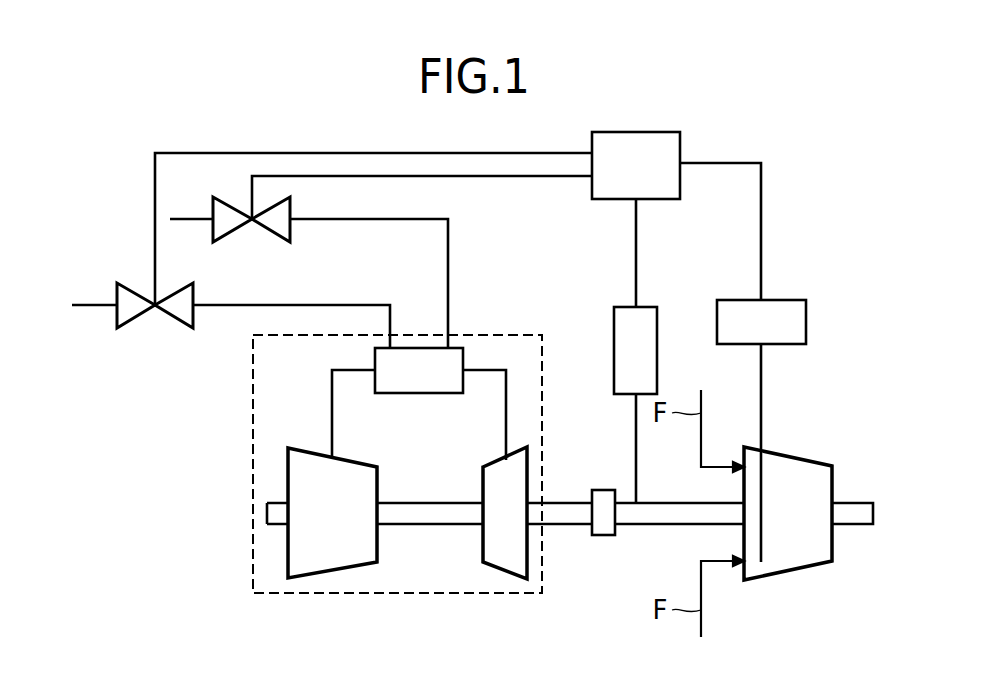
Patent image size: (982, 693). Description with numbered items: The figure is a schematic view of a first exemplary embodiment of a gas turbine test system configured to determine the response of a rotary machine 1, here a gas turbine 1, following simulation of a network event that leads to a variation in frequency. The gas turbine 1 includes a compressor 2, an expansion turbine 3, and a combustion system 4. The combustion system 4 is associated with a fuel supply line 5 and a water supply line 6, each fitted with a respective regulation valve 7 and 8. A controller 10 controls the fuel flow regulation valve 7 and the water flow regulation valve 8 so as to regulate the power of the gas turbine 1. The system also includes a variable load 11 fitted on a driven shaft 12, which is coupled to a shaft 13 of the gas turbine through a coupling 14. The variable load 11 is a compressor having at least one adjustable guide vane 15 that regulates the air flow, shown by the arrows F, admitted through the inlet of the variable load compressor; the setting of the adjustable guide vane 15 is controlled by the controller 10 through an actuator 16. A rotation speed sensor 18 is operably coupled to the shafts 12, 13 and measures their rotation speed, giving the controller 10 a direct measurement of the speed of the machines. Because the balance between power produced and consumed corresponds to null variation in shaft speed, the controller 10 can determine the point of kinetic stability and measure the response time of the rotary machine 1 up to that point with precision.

The gas turbine 1 is at (346, 594).
The compressor 2 is at (323, 527).
The expansion turbine 3 is at (497, 527).
The combustion system 4 is at (410, 384).
The fuel supply line 5 is at (191, 219).
The water supply line 6 is at (95, 305).
The fuel flow regulation valve 7 is at (232, 231).
The water flow regulation valve 8 is at (135, 319).
The controller 10 is at (619, 177).
The variable load 11 is at (771, 527).
The driven shaft 12 is at (680, 526).
The shaft 13 is at (572, 526).
The coupling 14 is at (603, 536).
The adjustable guide vane 15 is at (765, 542).
The actuator 16 is at (745, 336).
The rotation speed sensor 18 is at (619, 364).